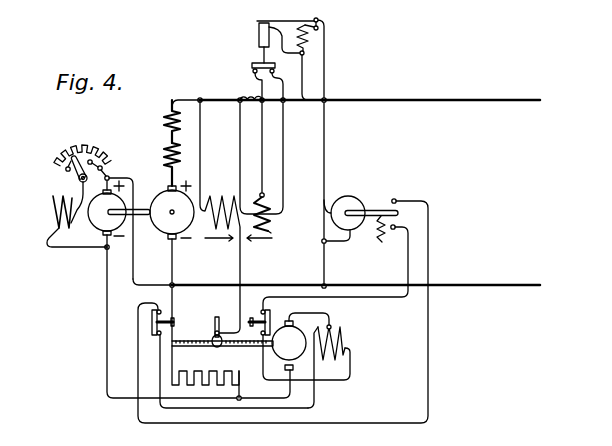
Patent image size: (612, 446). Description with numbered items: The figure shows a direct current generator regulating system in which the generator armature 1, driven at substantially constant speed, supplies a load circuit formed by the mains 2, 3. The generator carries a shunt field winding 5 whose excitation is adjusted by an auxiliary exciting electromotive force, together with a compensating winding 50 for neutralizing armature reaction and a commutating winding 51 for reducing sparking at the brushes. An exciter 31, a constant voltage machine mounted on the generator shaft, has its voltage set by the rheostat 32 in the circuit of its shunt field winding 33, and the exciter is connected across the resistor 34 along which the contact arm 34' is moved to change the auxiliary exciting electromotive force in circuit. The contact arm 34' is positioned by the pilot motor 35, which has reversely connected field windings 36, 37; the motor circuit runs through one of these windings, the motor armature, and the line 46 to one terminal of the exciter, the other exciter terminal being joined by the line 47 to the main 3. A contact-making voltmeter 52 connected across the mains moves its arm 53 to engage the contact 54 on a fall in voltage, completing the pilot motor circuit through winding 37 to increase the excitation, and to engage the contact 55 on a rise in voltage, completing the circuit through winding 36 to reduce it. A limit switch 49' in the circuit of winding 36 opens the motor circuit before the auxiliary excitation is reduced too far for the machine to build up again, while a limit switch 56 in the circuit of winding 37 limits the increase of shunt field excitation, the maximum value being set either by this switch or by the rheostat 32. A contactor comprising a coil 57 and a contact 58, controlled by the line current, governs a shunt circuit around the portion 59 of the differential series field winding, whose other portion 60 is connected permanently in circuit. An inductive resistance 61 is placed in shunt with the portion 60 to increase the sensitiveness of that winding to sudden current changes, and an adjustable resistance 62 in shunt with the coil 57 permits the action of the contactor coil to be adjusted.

The armature 1 is at (162, 202).
The main 2 is at (496, 99).
The main 3 is at (501, 283).
The shunt field winding 5 is at (221, 196).
The exciter 31 is at (97, 222).
The rheostat 32 is at (91, 145).
The shunt field winding 33 is at (53, 198).
The resistor 34 is at (211, 357).
The contact arm 34' is at (222, 354).
The pilot motor 35 is at (300, 341).
The field winding 36 is at (323, 362).
The field winding 37 is at (343, 333).
The line 46 is at (104, 285).
The line 47 is at (132, 286).
The limit switch 49' is at (207, 359).
The compensating winding 50 is at (163, 152).
The commutating winding 51 is at (163, 121).
The contact-making voltmeter 52 is at (350, 197).
The arm 53 is at (379, 208).
The contact 54 is at (392, 230).
The contact 55 is at (396, 199).
The limit switch 56 is at (252, 319).
The coil 57 is at (258, 22).
The contact 58 is at (252, 64).
The portion of differential series field winding 59 is at (271, 233).
The portion of differential series field winding 60 is at (258, 192).
The inductive resistance 61 is at (244, 96).
The adjustable resistance 62 is at (308, 47).